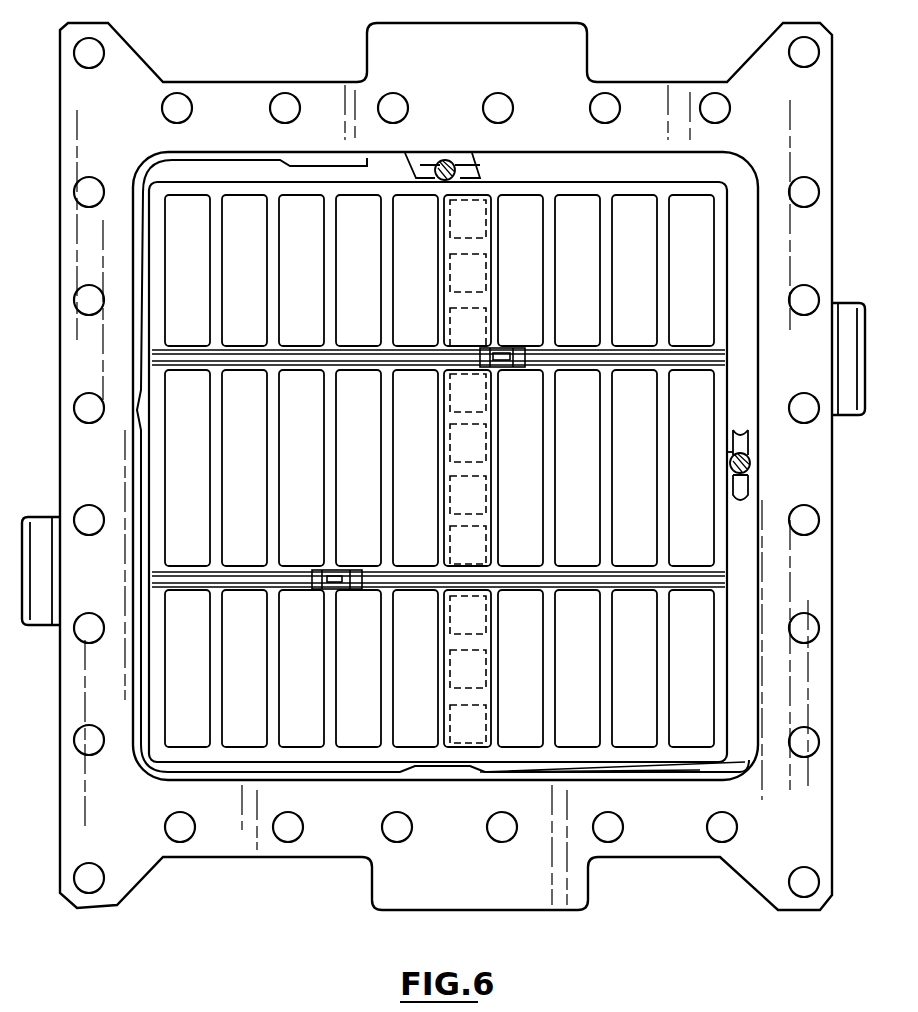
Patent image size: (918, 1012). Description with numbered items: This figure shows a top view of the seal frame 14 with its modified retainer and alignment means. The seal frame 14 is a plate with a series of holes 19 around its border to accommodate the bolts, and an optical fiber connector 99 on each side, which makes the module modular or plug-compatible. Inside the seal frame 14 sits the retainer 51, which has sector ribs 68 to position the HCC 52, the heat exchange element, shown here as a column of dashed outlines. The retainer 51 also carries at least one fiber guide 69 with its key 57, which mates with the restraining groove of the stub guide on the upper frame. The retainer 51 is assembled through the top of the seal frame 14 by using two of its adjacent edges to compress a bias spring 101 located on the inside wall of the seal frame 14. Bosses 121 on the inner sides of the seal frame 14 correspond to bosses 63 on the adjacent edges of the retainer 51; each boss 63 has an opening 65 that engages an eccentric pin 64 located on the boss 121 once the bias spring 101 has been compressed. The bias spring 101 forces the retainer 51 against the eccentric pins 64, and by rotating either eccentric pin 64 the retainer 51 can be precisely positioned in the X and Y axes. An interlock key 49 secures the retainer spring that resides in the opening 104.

The seal frame 14 is at (748, 85).
The holes 19 is at (808, 536).
The interlock key 49 is at (500, 350).
The retainer 51 is at (195, 760).
The HCC 52 is at (465, 270).
The key 57 is at (640, 367).
The boss 63 is at (422, 163).
The eccentric pin 64 is at (460, 175).
The opening 65 is at (440, 183).
The sector rib 68 is at (222, 316).
The fiber guide 69 is at (684, 368).
The optical fiber connector 99 is at (45, 515).
The bias spring 101 is at (335, 152).
The opening 104 is at (510, 368).
The bosses 121 is at (470, 160).